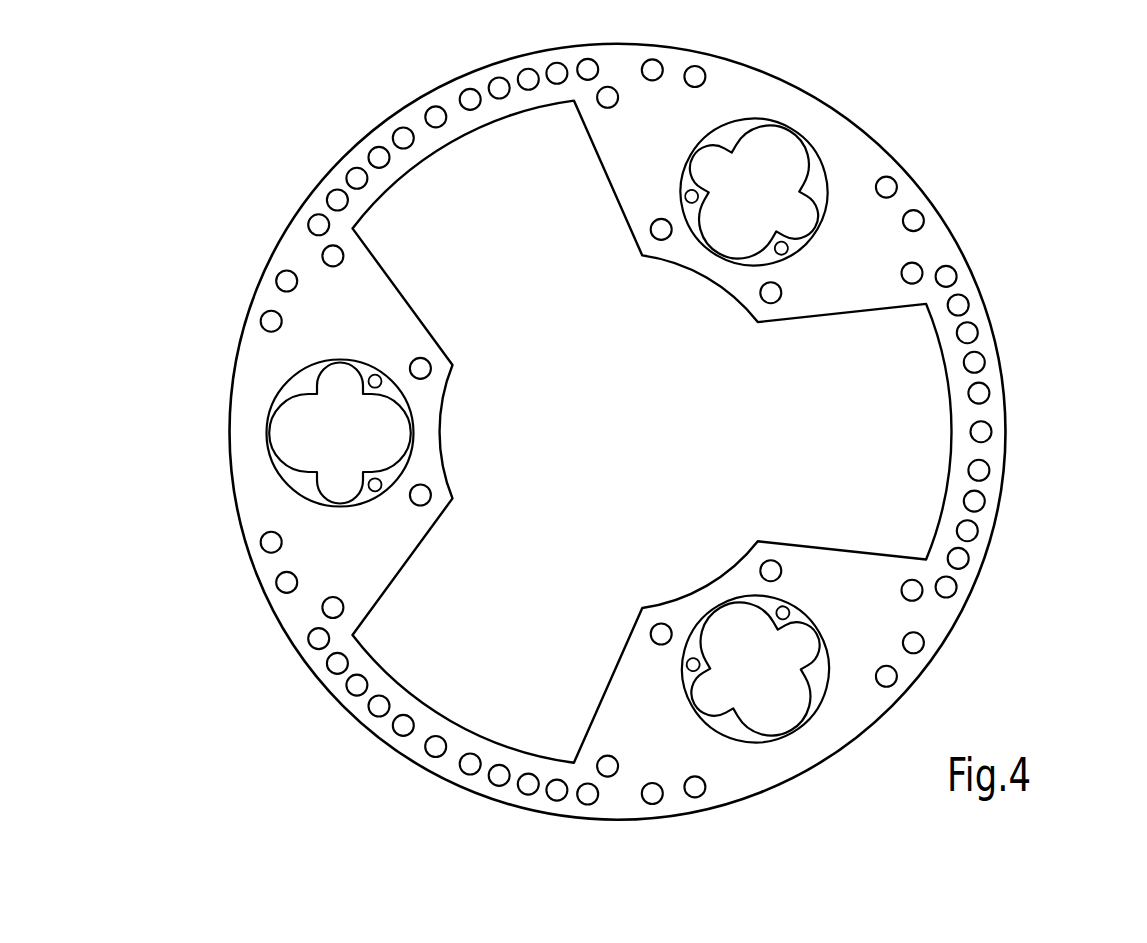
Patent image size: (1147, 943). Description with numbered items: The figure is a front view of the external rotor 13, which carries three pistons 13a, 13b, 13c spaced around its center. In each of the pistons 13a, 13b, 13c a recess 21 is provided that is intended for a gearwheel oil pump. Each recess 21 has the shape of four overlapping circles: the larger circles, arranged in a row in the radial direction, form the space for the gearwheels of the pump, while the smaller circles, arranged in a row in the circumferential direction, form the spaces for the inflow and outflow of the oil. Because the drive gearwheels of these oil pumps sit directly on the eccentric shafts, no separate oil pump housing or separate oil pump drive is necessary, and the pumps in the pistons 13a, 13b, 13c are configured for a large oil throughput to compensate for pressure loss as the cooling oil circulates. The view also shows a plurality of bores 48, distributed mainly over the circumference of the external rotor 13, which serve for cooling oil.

The external rotor 13 is at (955, 230).
The piston 13a is at (815, 268).
The piston 13b is at (840, 615).
The piston 13c is at (353, 522).
The recess 21 is at (758, 158).
The bore 48 is at (694, 76).